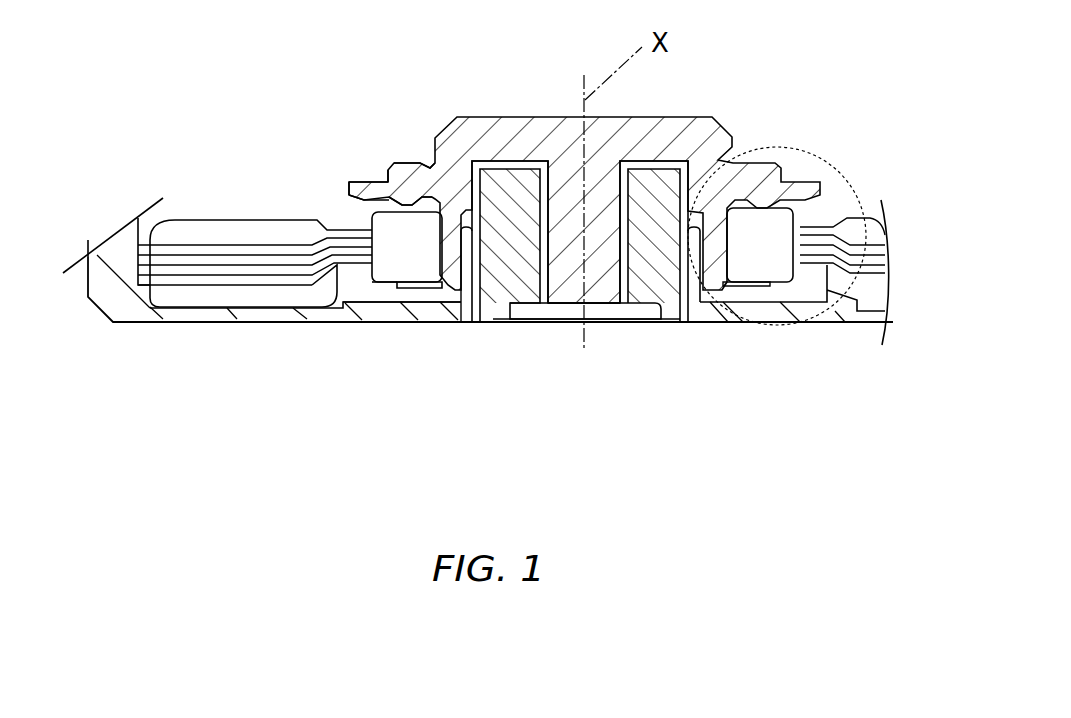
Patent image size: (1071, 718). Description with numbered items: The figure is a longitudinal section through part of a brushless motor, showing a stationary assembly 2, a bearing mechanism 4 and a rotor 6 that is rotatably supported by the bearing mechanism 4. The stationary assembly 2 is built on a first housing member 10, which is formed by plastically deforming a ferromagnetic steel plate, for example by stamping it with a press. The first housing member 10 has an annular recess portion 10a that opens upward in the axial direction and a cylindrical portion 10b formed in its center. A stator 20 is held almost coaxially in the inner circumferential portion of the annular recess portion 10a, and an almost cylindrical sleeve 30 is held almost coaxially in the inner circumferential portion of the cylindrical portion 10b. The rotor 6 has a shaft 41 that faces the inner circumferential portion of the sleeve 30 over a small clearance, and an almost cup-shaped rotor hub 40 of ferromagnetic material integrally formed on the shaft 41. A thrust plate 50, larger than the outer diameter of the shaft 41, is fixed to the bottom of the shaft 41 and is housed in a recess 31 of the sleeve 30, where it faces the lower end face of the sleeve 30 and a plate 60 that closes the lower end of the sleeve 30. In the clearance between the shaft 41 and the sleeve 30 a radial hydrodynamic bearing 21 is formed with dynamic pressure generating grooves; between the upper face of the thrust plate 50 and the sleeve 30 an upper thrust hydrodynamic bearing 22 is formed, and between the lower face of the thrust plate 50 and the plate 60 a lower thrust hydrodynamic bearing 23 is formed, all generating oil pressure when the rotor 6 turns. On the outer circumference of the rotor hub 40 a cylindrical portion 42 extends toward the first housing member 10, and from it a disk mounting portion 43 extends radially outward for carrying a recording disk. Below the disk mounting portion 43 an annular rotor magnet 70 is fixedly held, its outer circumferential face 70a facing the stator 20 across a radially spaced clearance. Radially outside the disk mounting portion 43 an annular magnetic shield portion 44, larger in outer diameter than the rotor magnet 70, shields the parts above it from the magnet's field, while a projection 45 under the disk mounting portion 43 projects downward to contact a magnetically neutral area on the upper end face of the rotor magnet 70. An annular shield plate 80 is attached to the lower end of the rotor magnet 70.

The stationary assembly 2 is at (777, 337).
The bearing mechanism 4 is at (610, 343).
The rotor 6 is at (697, 107).
The first housing member 10 is at (250, 317).
The annular recess portion 10a is at (127, 243).
The cylindrical portion 10b is at (467, 293).
The stator 20 is at (218, 216).
The radial hydrodynamic bearing 21 is at (508, 190).
The upper thrust hydrodynamic bearing 22 is at (668, 283).
The lower thrust hydrodynamic bearing 23 is at (527, 313).
The sleeve 30 is at (662, 315).
The recess 31 is at (478, 305).
The rotor hub 40 is at (458, 112).
The shaft 41 is at (568, 190).
The cylindrical portion 42 is at (431, 168).
The disk mounting portion 43 is at (352, 183).
The magnetic shield portion 44 is at (358, 188).
The projection 45 is at (397, 205).
The thrust plate 50 is at (648, 308).
The plate 60 is at (550, 318).
The rotor magnet 70 is at (402, 260).
The outer circumferential face 70a is at (365, 280).
The annular shield plate 80 is at (417, 283).